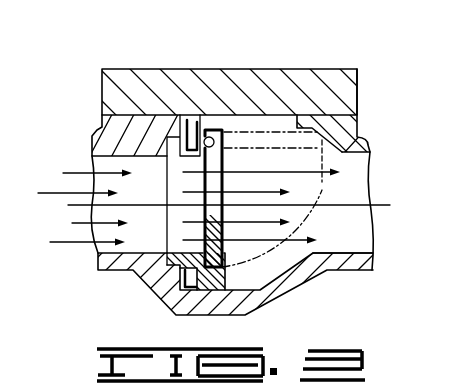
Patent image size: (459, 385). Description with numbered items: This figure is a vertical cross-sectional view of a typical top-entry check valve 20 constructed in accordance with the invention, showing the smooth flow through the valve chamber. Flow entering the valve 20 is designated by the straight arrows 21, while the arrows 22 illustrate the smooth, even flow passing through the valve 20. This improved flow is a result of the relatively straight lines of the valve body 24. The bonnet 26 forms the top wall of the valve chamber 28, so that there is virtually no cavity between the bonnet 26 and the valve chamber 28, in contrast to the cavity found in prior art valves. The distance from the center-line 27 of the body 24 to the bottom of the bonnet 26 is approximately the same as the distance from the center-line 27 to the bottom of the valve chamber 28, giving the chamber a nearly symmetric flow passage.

The top-entry check valve 20 is at (105, 58).
The straight arrows 21 is at (85, 173).
The arrows 22 is at (263, 172).
The valve body 24 is at (108, 140).
The bonnet 26 is at (178, 80).
The center-line 27 is at (377, 203).
The valve chamber 28 is at (370, 188).